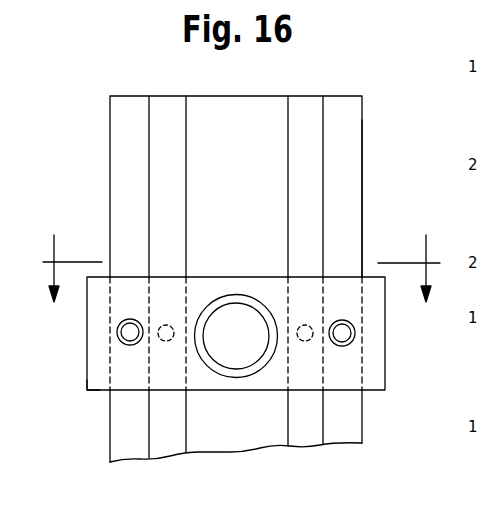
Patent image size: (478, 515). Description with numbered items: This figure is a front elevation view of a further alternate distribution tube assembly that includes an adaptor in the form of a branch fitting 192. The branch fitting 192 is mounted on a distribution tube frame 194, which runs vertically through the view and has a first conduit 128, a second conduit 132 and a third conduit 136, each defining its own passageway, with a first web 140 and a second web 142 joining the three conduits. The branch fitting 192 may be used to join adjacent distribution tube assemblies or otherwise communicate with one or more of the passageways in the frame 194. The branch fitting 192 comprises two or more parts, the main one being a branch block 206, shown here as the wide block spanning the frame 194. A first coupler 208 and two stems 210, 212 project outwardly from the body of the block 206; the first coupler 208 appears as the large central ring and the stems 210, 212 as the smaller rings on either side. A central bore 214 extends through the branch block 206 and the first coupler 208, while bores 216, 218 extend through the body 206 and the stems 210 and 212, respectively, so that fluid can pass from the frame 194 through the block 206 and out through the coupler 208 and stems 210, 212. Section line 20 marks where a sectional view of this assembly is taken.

The section line 20 is at (242, 246).
The first conduit 128 is at (213, 105).
The second conduit 132 is at (350, 440).
The third conduit 136 is at (131, 457).
The first web 140 is at (306, 441).
The second web 142 is at (161, 452).
The branch fitting 192 is at (95, 392).
The distribution tube frame 194 is at (363, 199).
The branch block 206 is at (386, 384).
The first coupler 208 is at (256, 368).
The stem 210 is at (349, 345).
The stem 212 is at (139, 341).
The central bore 214 is at (220, 303).
The bore 216 is at (340, 333).
The bore 218 is at (140, 331).